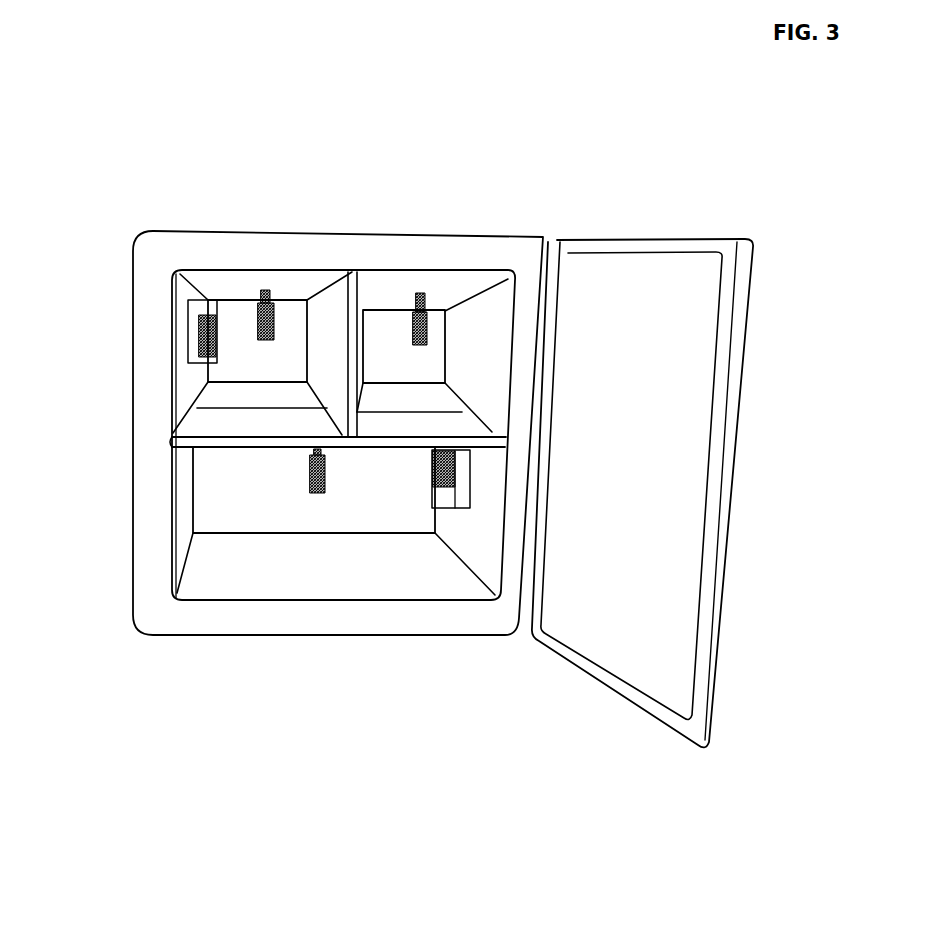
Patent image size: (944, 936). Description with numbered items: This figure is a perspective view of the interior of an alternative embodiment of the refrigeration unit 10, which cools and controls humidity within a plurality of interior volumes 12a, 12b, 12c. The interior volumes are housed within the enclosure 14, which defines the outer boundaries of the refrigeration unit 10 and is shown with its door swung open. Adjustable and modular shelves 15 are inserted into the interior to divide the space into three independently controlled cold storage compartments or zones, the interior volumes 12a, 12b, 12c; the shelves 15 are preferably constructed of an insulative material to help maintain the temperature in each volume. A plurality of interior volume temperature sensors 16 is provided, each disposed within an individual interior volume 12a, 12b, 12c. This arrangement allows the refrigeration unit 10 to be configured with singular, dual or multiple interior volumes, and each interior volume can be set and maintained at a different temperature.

The refrigeration unit 10 is at (110, 413).
The interior volume 12a is at (217, 511).
The interior volume 12b is at (235, 288).
The interior volume 12c is at (449, 287).
The enclosure 14 is at (342, 231).
The shelves 15 is at (258, 428).
The interior volume temperature sensors 16 is at (265, 290).